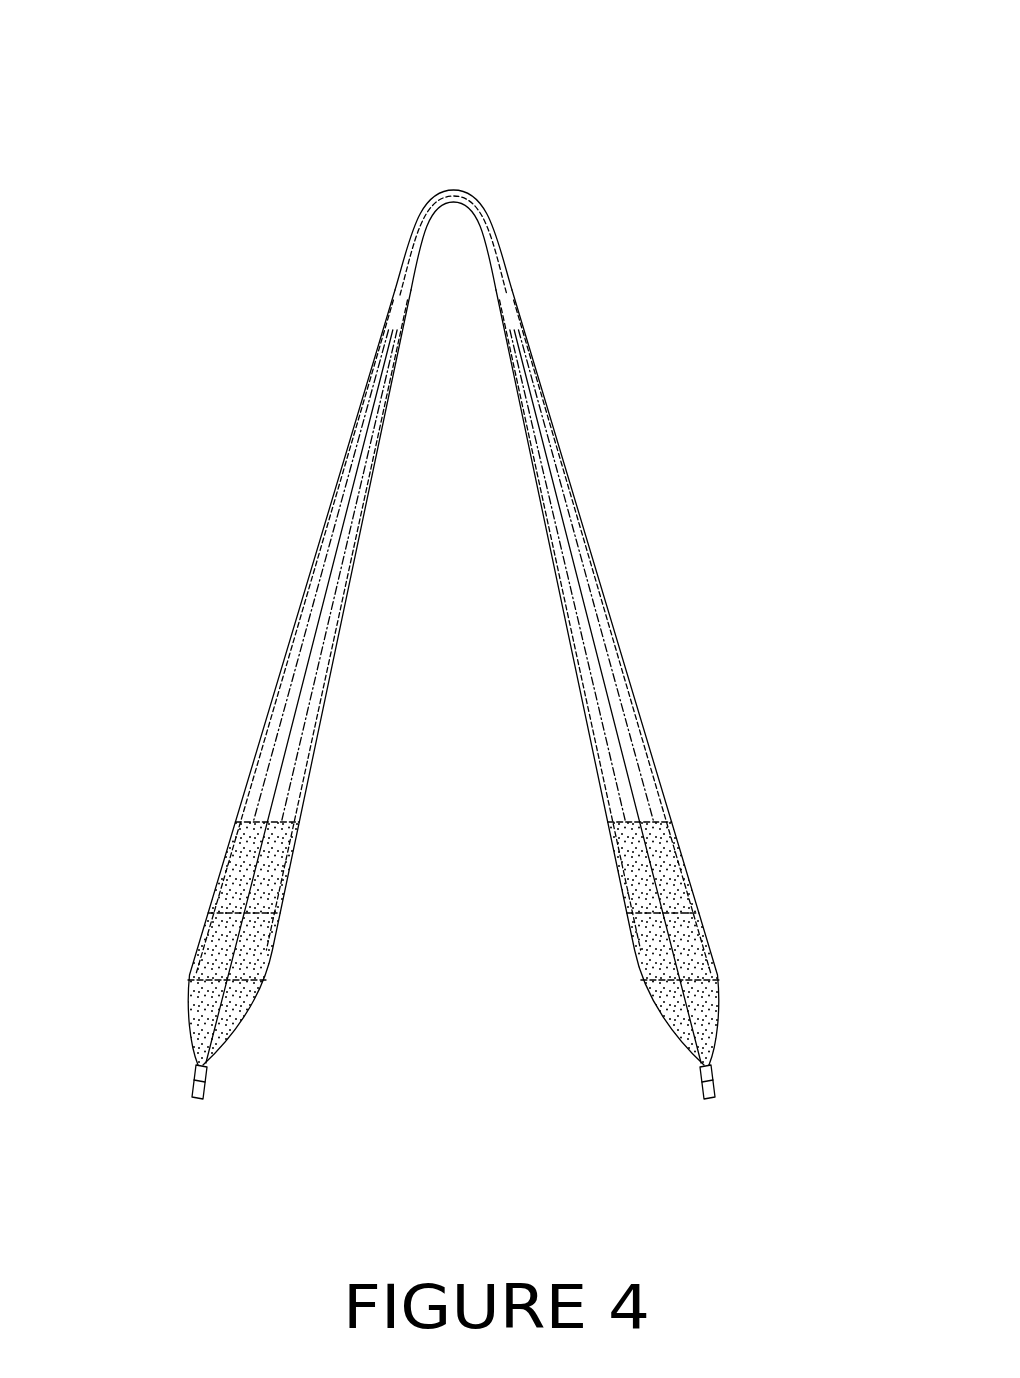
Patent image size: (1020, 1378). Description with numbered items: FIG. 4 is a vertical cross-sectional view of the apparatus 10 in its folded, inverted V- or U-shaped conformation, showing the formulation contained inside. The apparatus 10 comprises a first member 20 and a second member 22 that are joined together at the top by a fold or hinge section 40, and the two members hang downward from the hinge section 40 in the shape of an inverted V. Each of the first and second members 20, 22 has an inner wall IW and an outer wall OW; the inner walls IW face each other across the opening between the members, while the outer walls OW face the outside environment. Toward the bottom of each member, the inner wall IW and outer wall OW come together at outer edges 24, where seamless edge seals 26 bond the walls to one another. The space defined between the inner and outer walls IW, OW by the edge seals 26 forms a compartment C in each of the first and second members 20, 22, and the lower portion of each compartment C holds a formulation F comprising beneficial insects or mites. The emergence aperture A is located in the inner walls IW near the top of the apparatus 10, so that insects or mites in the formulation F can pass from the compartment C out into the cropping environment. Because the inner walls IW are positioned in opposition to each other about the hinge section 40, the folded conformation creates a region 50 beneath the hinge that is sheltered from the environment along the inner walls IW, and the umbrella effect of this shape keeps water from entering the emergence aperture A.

The apparatus 10 is at (255, 176).
The fold or hinge section 40 is at (455, 190).
The sheltered region 50 is at (452, 330).
The first region or member 20 is at (313, 550).
The second region or member 22 is at (597, 567).
The outer edges 24 is at (198, 1100).
The edge seals 26 is at (195, 1082).
The emergence aperture A is at (503, 327).
The inner wall IW is at (568, 625).
The outer wall OW is at (222, 858).
The compartment C is at (278, 748).
The formulation F is at (240, 1068).